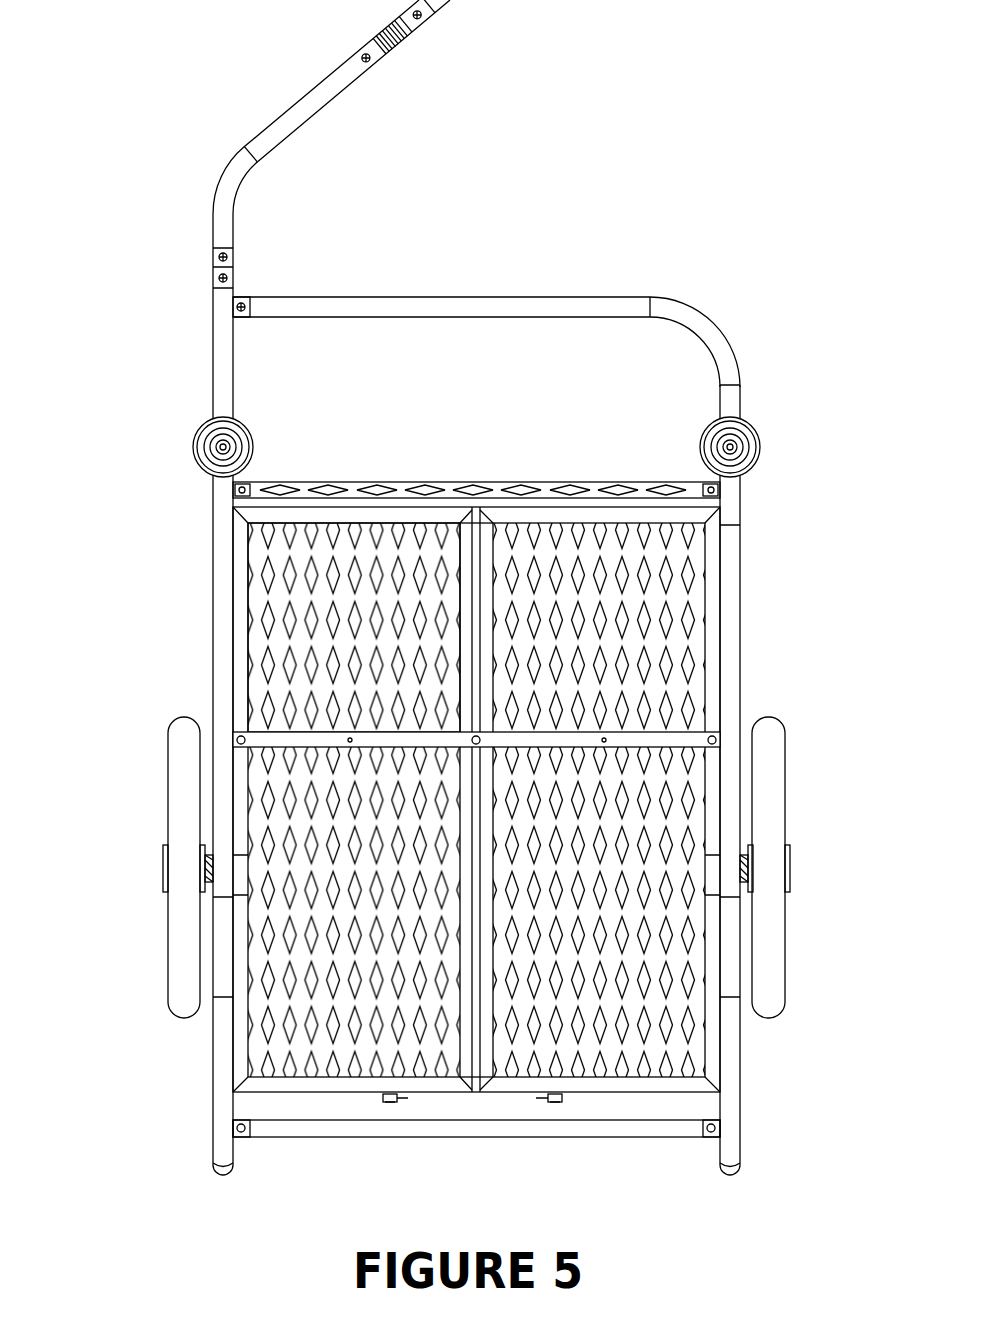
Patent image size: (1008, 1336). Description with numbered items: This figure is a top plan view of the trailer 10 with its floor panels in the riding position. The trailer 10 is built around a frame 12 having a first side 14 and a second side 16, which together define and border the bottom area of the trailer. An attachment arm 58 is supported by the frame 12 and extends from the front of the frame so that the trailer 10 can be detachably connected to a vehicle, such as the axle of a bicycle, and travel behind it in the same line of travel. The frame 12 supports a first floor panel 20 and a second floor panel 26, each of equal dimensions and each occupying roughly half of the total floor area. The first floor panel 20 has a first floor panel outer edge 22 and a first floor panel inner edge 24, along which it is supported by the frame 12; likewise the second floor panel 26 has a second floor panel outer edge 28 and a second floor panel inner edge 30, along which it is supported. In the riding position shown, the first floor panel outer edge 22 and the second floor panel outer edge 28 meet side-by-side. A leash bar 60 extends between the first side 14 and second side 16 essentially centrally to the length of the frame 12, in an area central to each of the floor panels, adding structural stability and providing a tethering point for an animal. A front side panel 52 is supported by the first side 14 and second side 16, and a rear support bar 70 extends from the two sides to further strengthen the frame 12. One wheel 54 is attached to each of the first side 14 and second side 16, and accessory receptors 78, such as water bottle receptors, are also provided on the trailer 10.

The trailer 10 is at (612, 52).
The frame 12 is at (512, 306).
The first side 14 is at (213, 581).
The second side 16 is at (738, 582).
The first floor panel 20 is at (343, 560).
The first floor panel outer edge 22 is at (452, 1045).
The first floor panel inner edge 24 is at (257, 679).
The second floor panel 26 is at (582, 605).
The second floor panel outer edge 28 is at (500, 1046).
The second floor panel inner edge 30 is at (690, 644).
The front side panel 52 is at (456, 489).
The wheel 54 is at (175, 826).
The attachment arm 58 is at (293, 122).
The leash bar 60 is at (688, 735).
The rear support bar 70 is at (678, 1125).
The accessory receptors 78 is at (194, 447).